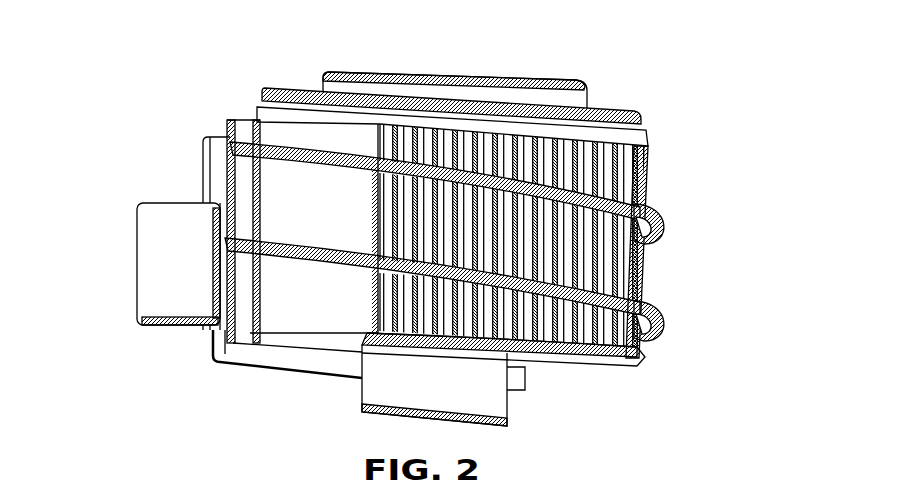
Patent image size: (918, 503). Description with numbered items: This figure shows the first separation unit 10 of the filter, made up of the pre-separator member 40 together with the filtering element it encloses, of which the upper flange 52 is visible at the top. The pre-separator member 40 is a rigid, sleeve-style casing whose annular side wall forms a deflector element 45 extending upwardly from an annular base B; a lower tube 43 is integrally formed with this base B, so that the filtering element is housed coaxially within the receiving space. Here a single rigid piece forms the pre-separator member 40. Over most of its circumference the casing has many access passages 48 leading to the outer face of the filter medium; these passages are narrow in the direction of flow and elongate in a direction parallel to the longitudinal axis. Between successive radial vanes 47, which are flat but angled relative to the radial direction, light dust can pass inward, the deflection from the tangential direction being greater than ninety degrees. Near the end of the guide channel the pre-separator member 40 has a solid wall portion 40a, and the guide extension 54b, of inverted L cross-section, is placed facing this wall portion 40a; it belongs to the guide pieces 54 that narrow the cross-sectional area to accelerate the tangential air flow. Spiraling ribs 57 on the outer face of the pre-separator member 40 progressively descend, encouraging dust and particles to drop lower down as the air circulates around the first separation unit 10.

The first separation unit 10 is at (676, 179).
The pre-separator member 40 is at (257, 123).
The wall portion 40a is at (315, 315).
The lower tube 43 is at (360, 398).
The deflector element 45 is at (387, 192).
The radial vanes 47 is at (530, 325).
The access passages 48 is at (456, 128).
The upper flange 52 is at (590, 120).
The guide pieces 54 is at (167, 201).
The guide extension 54b is at (153, 292).
The spiraling ribs 57 is at (634, 307).
The annular base B is at (273, 343).